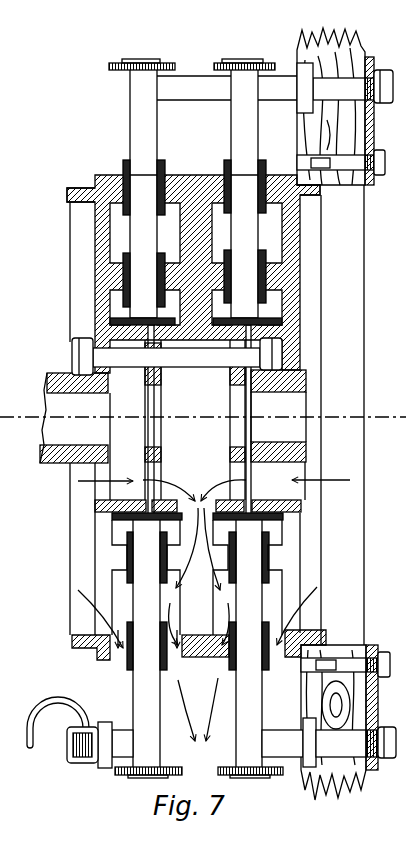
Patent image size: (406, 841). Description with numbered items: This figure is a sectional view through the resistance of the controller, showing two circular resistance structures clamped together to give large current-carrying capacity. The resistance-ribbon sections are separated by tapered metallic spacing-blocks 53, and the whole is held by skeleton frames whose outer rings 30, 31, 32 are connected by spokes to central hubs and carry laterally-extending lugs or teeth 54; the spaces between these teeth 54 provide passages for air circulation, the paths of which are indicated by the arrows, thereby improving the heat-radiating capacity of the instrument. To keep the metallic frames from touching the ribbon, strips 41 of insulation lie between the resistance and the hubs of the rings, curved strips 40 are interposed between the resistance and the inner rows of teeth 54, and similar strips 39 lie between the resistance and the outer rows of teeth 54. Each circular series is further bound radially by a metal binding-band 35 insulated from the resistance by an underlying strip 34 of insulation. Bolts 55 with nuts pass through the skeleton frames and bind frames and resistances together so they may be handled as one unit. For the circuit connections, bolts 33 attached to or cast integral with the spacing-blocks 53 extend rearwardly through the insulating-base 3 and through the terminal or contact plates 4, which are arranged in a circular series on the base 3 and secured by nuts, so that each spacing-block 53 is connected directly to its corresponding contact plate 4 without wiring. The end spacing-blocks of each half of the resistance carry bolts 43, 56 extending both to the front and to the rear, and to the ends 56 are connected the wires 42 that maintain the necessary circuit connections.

The insulating-base 3 is at (369, 787).
The terminal or contact plate 4 is at (376, 128).
The outer ring 30 is at (100, 176).
The outer ring 31 is at (192, 176).
The outer ring 32 is at (281, 176).
The bolt 33 is at (332, 88).
The strip of insulation 34 is at (171, 64).
The binding-band 35 is at (236, 62).
The strip of insulation 39 is at (162, 163).
The curved strip of insulation 40 is at (163, 262).
The strip of insulation 41 is at (168, 322).
The wire 42 is at (58, 714).
The bolt 43 is at (329, 742).
The spacing-block 53 is at (249, 643).
The lug or tooth 54 is at (154, 163).
The bolt 55 is at (177, 356).
The bolt 56 is at (100, 745).